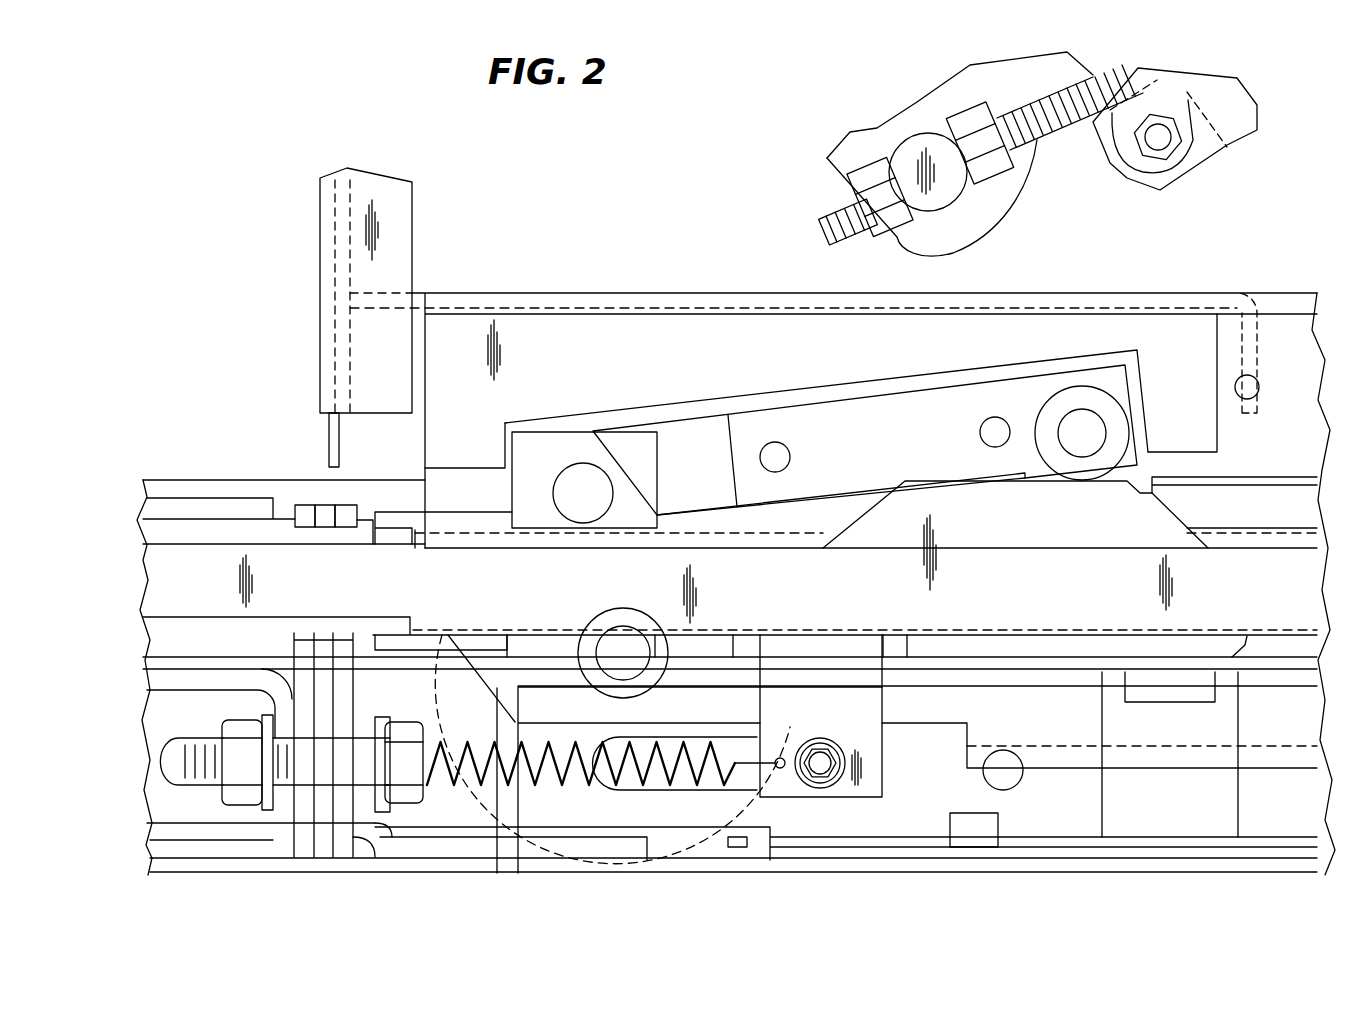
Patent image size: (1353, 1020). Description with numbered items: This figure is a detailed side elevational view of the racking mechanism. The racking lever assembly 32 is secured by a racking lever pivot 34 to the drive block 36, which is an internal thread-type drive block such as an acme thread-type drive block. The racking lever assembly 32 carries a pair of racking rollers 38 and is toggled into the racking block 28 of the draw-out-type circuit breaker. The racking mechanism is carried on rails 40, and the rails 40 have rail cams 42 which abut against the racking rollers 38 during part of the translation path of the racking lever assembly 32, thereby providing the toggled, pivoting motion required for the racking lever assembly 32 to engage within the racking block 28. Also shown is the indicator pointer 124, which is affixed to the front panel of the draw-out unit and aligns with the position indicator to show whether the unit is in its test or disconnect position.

The indicator pointer 124 is at (329, 450).
The racking block 28 is at (778, 393).
The racking lever assembly 32 is at (889, 452).
The racking lever pivot 34 is at (596, 506).
The drive block 36 is at (554, 464).
The racking rollers 38 is at (1128, 420).
The rails 40 is at (1024, 603).
The rail cams 42 is at (1027, 526).